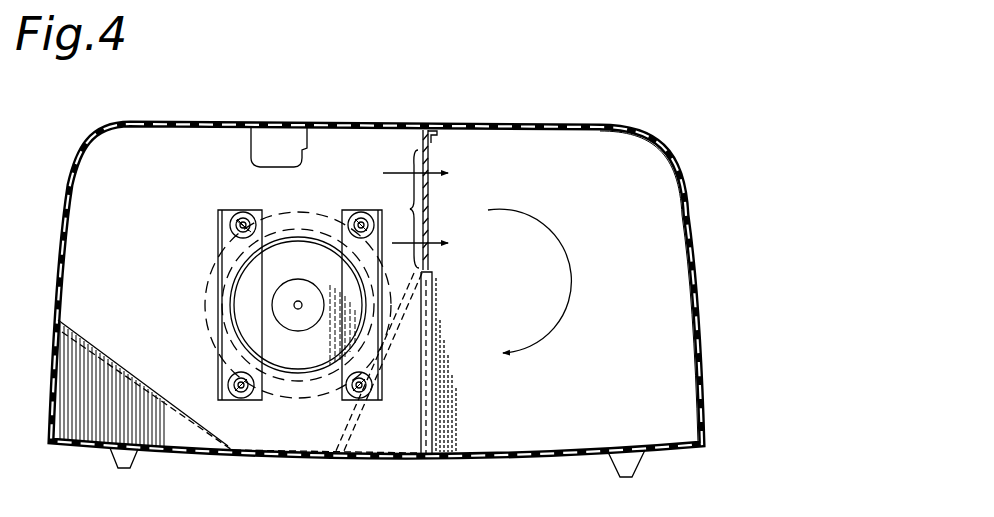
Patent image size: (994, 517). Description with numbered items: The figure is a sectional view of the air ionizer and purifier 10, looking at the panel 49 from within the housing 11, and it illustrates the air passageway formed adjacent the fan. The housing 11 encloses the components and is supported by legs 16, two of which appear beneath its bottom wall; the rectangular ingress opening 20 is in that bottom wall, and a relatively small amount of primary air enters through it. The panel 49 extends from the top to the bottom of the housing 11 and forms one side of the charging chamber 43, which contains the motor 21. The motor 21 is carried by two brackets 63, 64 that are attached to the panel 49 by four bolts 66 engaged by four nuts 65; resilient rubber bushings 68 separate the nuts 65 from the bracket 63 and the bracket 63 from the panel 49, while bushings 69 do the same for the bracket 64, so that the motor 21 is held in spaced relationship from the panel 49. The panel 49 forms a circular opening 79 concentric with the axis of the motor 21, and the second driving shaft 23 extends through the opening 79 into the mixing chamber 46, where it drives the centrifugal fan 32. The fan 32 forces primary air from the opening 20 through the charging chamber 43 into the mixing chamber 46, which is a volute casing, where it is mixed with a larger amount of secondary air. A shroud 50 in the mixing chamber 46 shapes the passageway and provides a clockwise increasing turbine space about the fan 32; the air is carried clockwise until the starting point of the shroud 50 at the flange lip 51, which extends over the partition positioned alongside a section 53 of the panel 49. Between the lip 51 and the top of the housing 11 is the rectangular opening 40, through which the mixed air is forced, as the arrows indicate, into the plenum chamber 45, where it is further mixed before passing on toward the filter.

The air ionizer and purifier 10 is at (588, 117).
The housing 11 is at (675, 158).
The legs 16 is at (137, 461).
The opening 20 is at (82, 448).
The motor 21 is at (300, 372).
The second driving shaft 23 is at (297, 309).
The centrifugal fan 32 is at (325, 212).
The opening 40 is at (412, 212).
The charging chamber 43 is at (140, 234).
The plenum chamber 45 is at (537, 316).
The mixing chamber 46 is at (264, 124).
The panel 49 is at (271, 146).
The shroud 50 is at (358, 433).
The flange lip 51 is at (433, 271).
The section 53 is at (430, 226).
The bracket 63 is at (218, 242).
The bracket 64 is at (376, 268).
The nuts 65 is at (232, 226).
The bolts 66 is at (250, 220).
The resilient rubber bushings 68 is at (245, 220).
The resilient rubber bushings 69 is at (364, 224).
The circular opening 79 is at (285, 240).